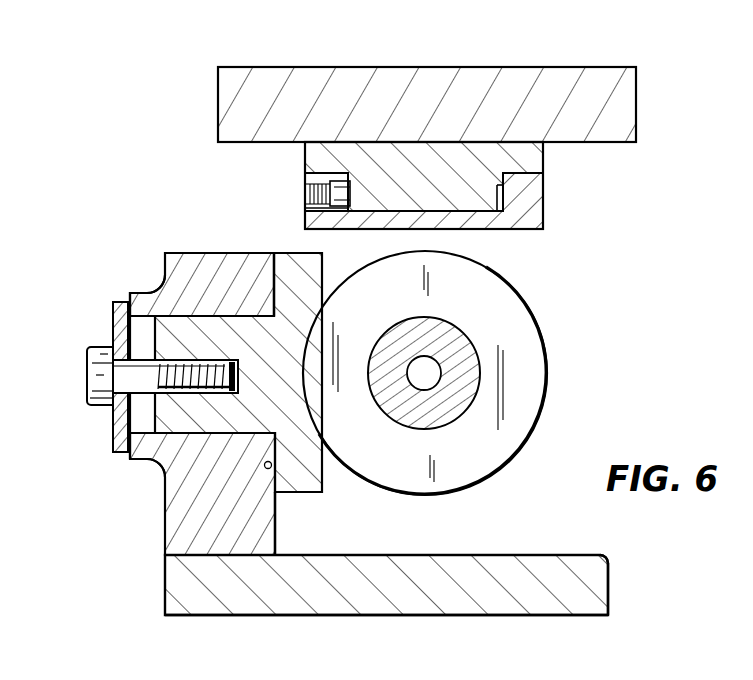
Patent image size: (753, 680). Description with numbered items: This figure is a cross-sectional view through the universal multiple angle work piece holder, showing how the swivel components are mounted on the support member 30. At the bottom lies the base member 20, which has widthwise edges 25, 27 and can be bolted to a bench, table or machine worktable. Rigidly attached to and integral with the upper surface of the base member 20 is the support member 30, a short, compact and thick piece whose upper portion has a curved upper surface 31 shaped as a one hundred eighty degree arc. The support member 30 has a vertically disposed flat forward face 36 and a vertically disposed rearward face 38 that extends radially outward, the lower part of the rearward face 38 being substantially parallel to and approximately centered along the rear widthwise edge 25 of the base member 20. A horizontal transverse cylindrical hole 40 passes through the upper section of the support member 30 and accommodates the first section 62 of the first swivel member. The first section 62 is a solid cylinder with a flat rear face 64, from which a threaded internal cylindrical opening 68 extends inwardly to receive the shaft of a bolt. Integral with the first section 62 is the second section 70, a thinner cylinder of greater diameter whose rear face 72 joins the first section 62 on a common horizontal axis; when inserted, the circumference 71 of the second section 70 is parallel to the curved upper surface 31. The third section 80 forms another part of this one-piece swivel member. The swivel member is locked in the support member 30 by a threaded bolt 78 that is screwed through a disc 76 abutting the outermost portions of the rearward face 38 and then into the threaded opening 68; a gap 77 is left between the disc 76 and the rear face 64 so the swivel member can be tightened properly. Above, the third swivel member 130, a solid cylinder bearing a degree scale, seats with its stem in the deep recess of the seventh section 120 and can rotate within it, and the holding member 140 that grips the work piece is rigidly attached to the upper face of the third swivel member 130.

The base member 20 is at (582, 630).
The widthwise edge 25 is at (163, 577).
The widthwise edge 27 is at (608, 577).
The support member 30 is at (186, 506).
The curved upper surface 31 is at (195, 252).
The forward face 36 is at (278, 520).
The rearward face 38 is at (162, 482).
The transverse cylindrical hole 40 is at (142, 320).
The first section 62 is at (270, 352).
The rear face 64 is at (143, 347).
The threaded internal cylindrical opening 68 is at (240, 357).
The second section 70 is at (325, 260).
The circumference 71 is at (293, 252).
The rear face 72 is at (268, 471).
The disc 76 is at (120, 302).
The gap 77 is at (142, 412).
The threaded bolt 78 is at (90, 375).
The third section 80 is at (527, 345).
The seventh section 120 is at (535, 206).
The third swivel member 130 is at (520, 155).
The holding member 140 is at (602, 66).